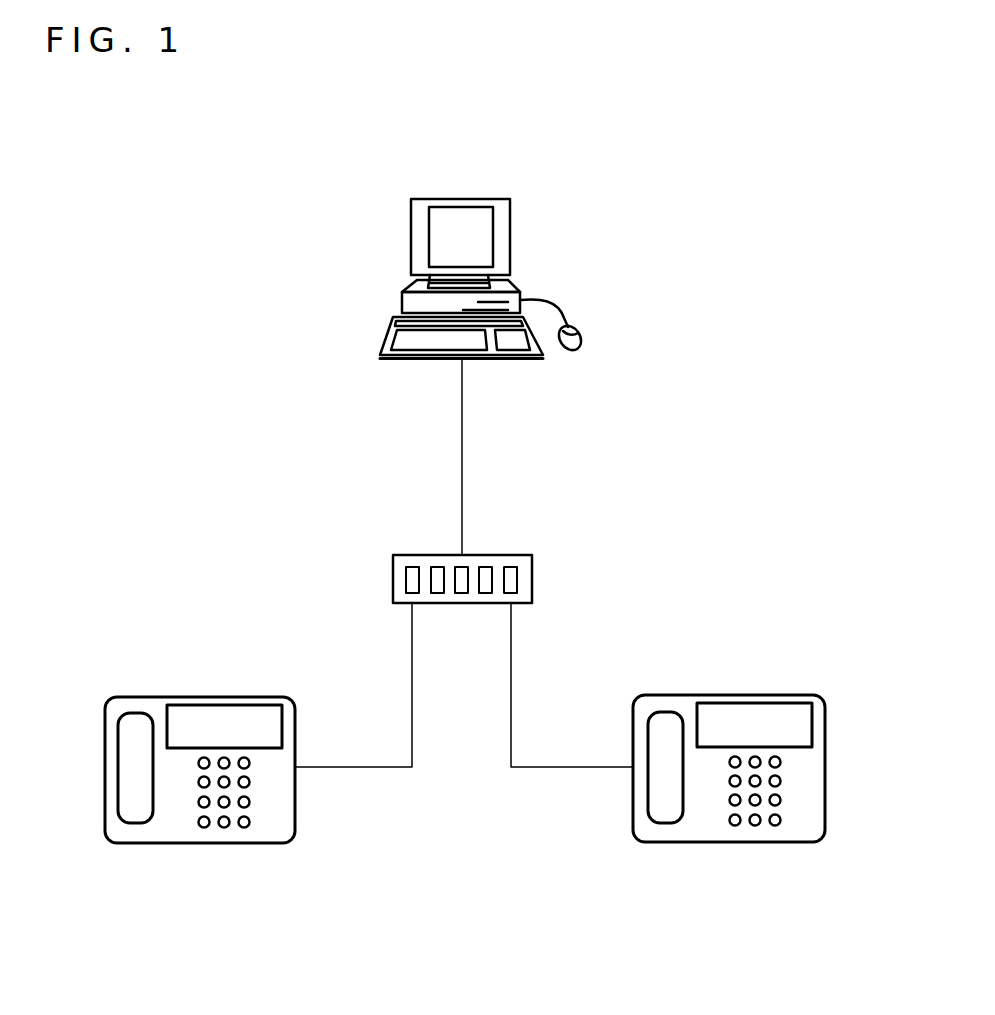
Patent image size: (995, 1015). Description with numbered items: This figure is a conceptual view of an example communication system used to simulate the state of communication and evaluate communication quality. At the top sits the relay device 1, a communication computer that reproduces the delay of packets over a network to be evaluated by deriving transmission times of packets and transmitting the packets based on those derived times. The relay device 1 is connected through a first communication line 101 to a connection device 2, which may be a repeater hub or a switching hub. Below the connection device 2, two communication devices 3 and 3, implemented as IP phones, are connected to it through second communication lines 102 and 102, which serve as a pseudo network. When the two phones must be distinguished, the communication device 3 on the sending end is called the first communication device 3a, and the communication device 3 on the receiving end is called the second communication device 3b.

The relay device 1 is at (467, 198).
The first communication line 101 is at (463, 455).
The connection device 2 is at (503, 555).
The second communication lines 102 is at (412, 678).
The communication device 3 is at (470, 726).
The first communication device 3a is at (728, 697).
The second communication device 3b is at (197, 697).